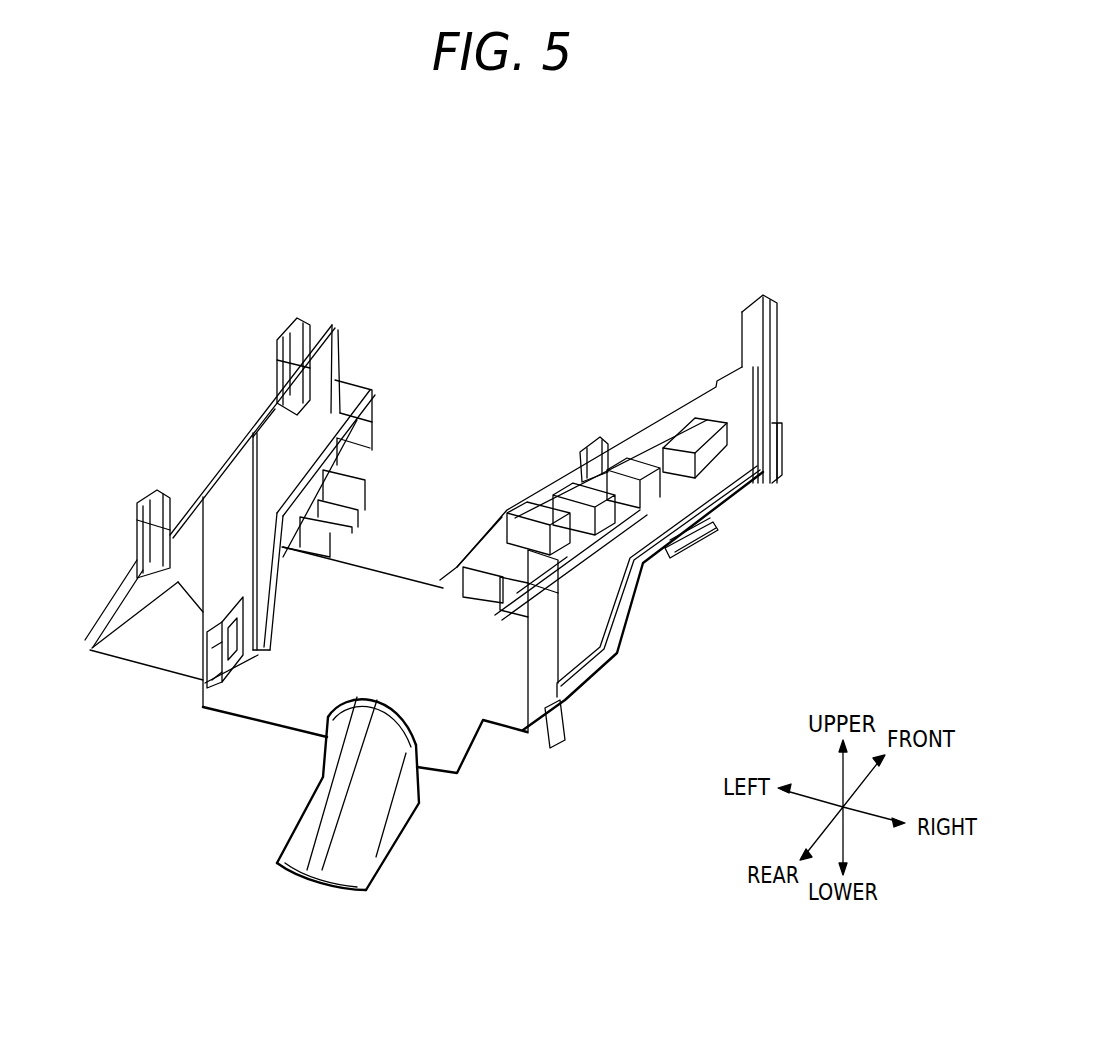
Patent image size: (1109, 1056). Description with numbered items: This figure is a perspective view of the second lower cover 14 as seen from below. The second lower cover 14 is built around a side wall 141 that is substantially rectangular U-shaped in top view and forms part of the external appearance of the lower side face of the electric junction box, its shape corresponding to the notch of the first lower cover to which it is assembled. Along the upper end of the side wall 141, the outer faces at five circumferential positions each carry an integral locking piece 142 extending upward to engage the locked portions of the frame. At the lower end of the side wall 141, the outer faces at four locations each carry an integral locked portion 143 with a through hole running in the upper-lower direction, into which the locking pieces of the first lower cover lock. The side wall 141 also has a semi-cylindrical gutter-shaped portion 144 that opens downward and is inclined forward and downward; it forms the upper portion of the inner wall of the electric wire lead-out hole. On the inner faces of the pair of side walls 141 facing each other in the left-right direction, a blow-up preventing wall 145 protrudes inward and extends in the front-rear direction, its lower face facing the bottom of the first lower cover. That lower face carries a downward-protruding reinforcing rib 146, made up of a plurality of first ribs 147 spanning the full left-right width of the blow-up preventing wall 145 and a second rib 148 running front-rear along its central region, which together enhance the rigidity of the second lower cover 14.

The second lower cover 14 is at (862, 322).
The side wall 141 is at (268, 707).
The locking piece 142 is at (277, 363).
The locked portion 143 is at (217, 657).
The gutter-shaped portion 144 is at (360, 858).
The blow-up preventing wall 145 is at (683, 440).
The reinforcing rib 146 is at (460, 296).
The first rib 147 is at (367, 437).
The second rib 148 is at (367, 400).